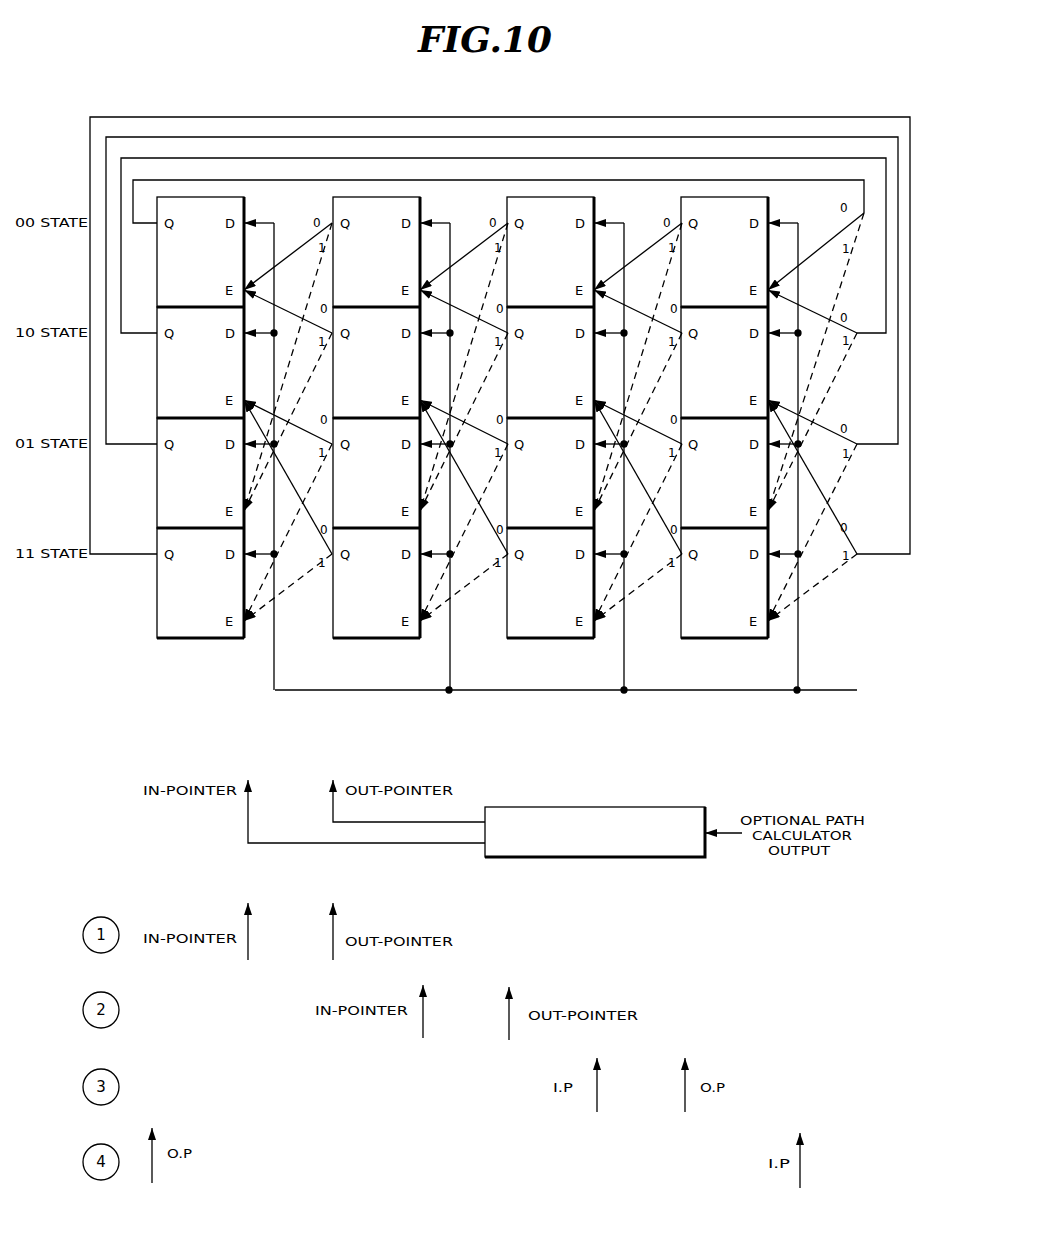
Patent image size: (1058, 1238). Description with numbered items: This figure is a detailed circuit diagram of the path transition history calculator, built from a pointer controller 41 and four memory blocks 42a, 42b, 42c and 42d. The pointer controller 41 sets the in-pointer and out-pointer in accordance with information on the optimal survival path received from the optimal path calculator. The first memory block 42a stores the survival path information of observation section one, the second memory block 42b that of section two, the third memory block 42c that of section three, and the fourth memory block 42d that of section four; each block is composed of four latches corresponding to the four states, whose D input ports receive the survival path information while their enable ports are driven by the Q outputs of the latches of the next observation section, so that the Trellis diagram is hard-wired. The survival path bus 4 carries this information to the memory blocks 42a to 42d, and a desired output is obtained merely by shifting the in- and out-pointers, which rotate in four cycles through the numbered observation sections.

The first memory block 42a is at (244, 641).
The second memory block 42b is at (420, 641).
The third memory block 42c is at (594, 641).
The fourth memory block 42d is at (768, 641).
The pointer controller 41 is at (612, 857).
The survival path bus 4 is at (826, 698).